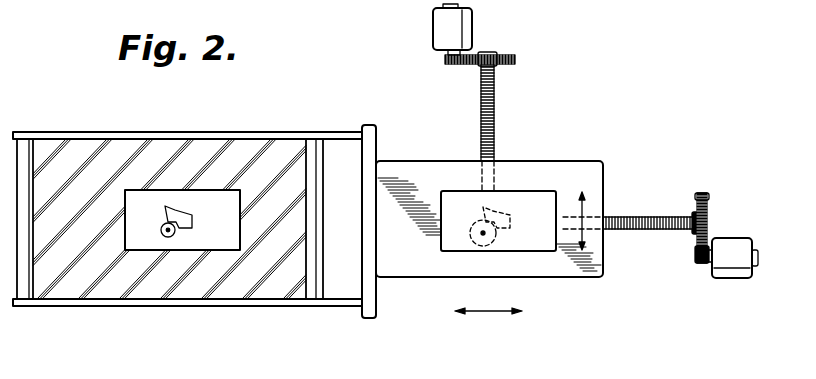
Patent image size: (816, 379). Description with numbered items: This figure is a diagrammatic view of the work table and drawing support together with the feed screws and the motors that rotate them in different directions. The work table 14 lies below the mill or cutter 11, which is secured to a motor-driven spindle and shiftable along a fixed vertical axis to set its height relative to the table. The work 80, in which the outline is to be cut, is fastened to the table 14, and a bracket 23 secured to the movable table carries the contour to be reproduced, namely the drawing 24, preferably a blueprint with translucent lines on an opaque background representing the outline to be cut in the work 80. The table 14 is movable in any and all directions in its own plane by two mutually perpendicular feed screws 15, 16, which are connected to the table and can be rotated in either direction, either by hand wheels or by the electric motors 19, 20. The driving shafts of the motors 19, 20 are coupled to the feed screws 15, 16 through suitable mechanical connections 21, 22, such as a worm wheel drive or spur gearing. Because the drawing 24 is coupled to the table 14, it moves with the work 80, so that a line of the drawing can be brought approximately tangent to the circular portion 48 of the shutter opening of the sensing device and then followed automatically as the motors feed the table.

The mill or cutter 11 is at (482, 234).
The work table 14 is at (550, 276).
The feed screw 15 is at (494, 127).
The feed screw 16 is at (640, 231).
The electric motor 19 is at (433, 23).
The electric motor 20 is at (735, 280).
The mechanical connection 21 is at (469, 72).
The mechanical connection 22 is at (713, 232).
The bracket 23 is at (192, 305).
The drawing 24 is at (197, 190).
The circular portion of shutter opening 48 is at (163, 230).
The work 80 is at (510, 210).